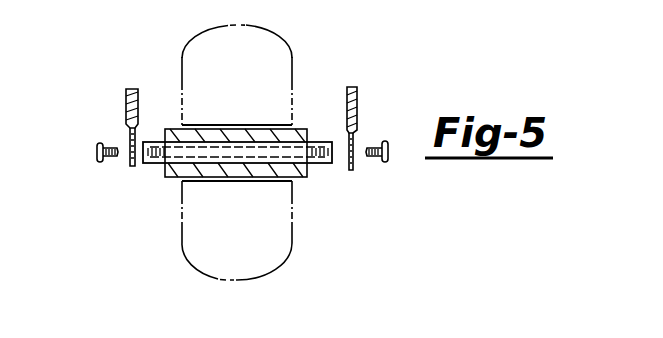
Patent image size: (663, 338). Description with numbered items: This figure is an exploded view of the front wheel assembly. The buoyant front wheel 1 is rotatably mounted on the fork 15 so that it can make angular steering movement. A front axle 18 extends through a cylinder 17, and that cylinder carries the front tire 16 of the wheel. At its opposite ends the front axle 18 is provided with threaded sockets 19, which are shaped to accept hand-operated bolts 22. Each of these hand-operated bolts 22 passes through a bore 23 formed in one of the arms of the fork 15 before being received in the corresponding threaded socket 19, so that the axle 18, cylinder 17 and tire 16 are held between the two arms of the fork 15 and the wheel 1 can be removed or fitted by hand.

The buoyant front wheel 1 is at (250, 143).
The fork 15 is at (95, 156).
The front tire 16 is at (184, 52).
The cylinder 17 is at (288, 136).
The front axle 18 is at (322, 163).
The threaded sockets 19 is at (249, 149).
The hand-operated bolts 22 is at (97, 150).
The bore 23 is at (128, 168).